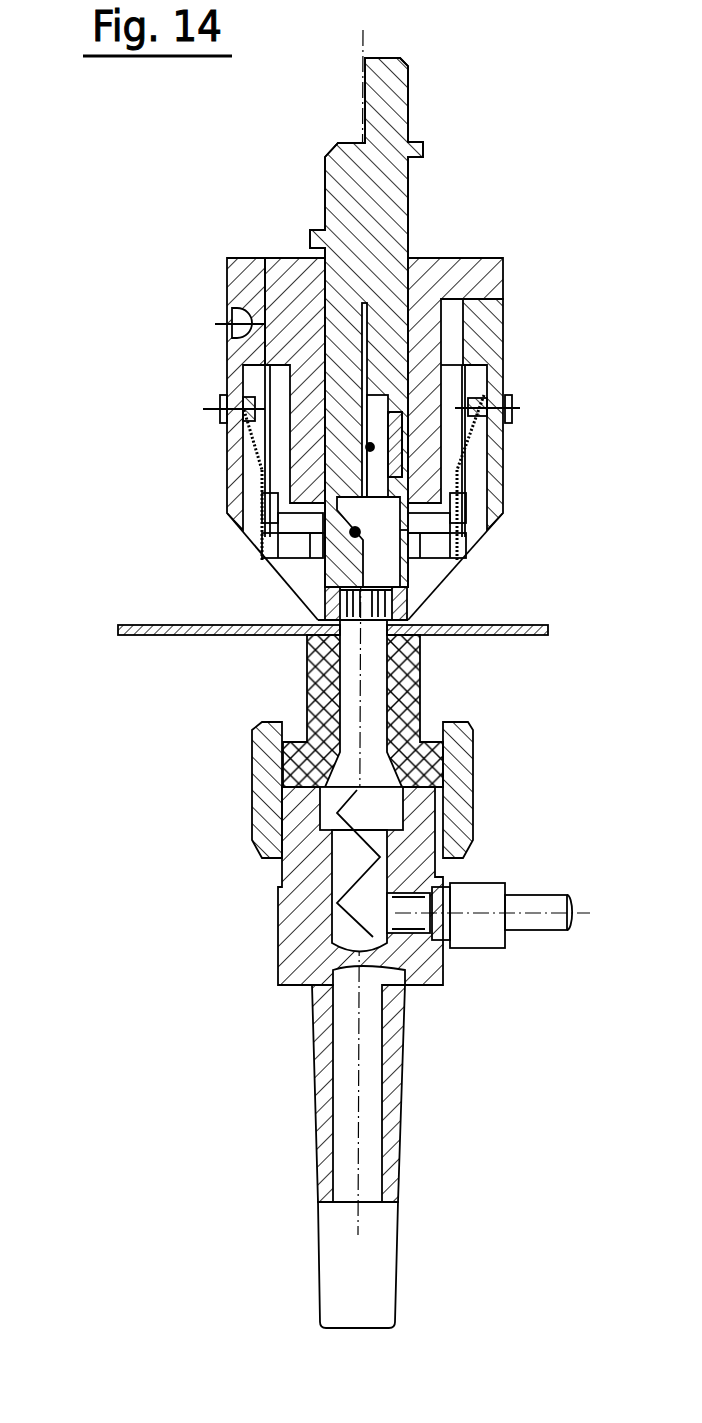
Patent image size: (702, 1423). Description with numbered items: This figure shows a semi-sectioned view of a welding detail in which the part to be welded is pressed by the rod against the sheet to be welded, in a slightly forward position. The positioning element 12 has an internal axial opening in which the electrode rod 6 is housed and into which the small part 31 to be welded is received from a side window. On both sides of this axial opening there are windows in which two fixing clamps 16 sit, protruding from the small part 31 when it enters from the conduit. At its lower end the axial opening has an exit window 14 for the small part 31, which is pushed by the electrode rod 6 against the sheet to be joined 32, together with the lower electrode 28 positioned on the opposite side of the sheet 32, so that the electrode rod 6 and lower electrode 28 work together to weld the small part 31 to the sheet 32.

The electrode rod 6 is at (372, 107).
The positioning element 12 is at (253, 258).
The exit window 14 is at (405, 613).
The fixing clamps 16 is at (280, 530).
The lower electrode 28 is at (420, 670).
The small part to be welded 31 is at (330, 608).
The sheet to be joined 32 is at (172, 637).